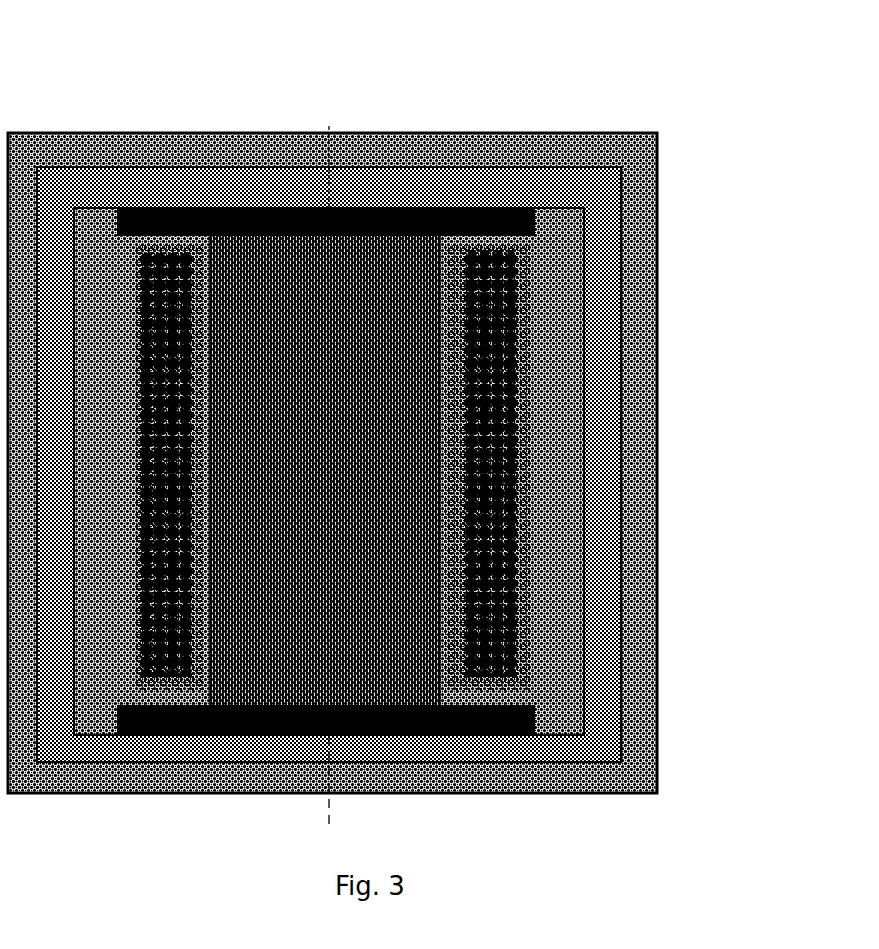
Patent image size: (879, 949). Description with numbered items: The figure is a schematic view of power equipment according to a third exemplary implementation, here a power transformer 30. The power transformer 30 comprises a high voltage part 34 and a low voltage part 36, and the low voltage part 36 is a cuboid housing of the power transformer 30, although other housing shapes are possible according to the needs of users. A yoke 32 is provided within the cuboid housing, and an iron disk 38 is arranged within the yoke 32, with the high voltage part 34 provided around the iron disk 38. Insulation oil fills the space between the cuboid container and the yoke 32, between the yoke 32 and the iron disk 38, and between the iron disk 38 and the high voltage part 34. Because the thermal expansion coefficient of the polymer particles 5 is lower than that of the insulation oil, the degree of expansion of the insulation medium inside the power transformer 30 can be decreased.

The power transformer 30 is at (124, 70).
The polymer particles 5 is at (639, 174).
The yoke 32 is at (607, 295).
The low voltage part 36 is at (657, 437).
The high voltage part 34 is at (518, 560).
The iron disk 38 is at (325, 470).